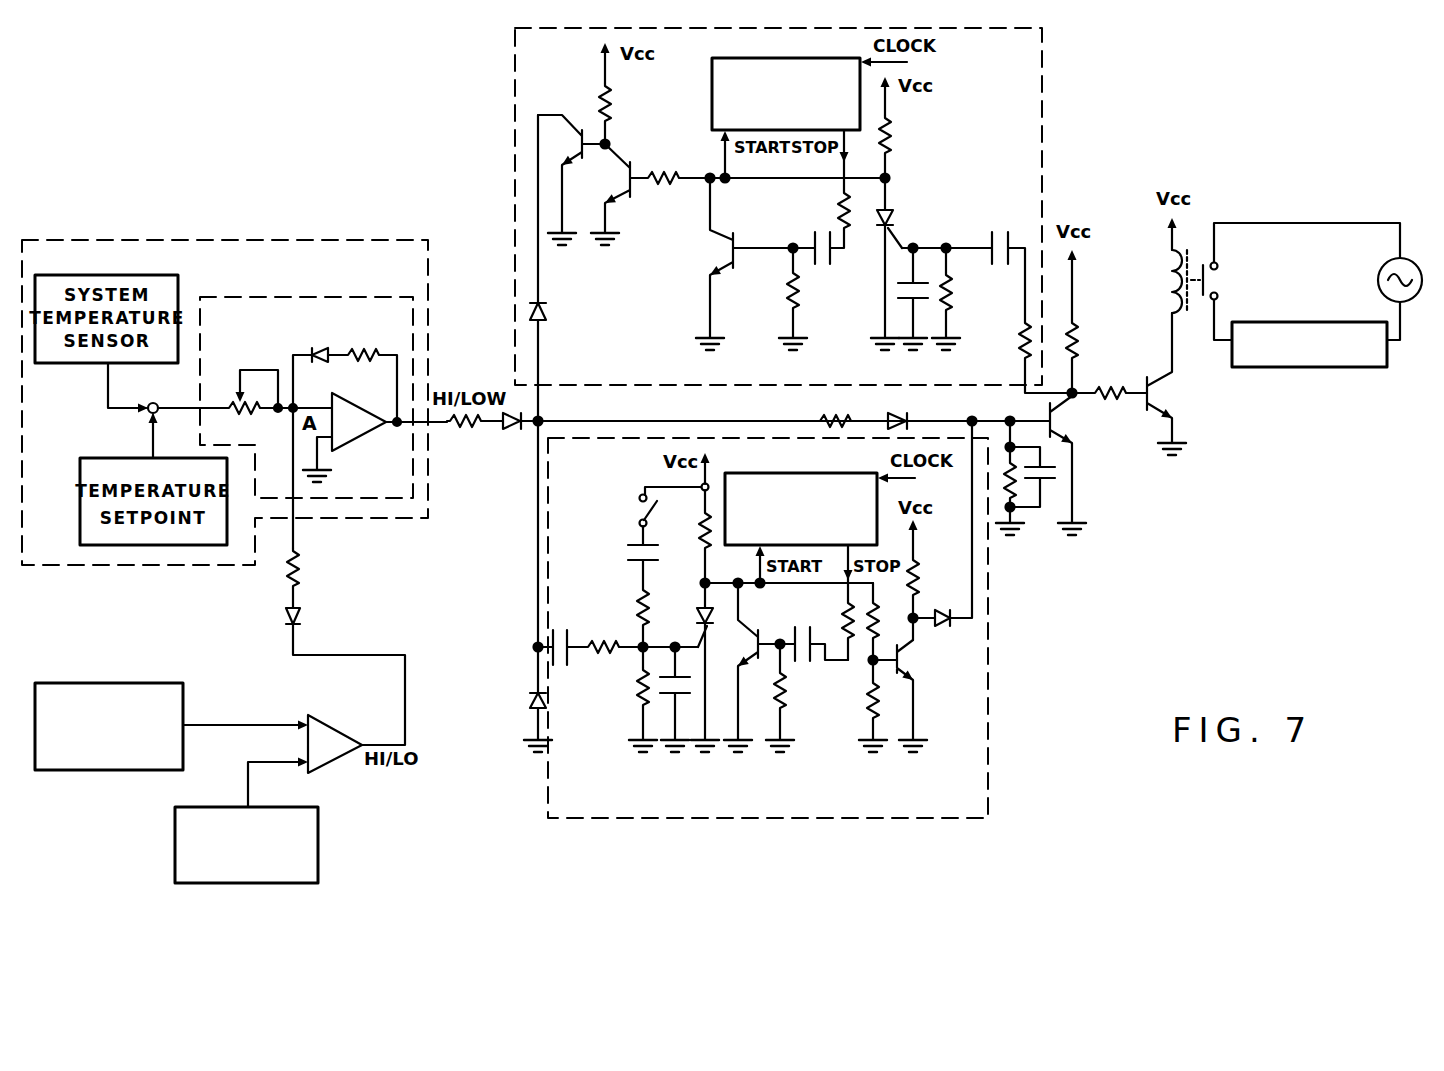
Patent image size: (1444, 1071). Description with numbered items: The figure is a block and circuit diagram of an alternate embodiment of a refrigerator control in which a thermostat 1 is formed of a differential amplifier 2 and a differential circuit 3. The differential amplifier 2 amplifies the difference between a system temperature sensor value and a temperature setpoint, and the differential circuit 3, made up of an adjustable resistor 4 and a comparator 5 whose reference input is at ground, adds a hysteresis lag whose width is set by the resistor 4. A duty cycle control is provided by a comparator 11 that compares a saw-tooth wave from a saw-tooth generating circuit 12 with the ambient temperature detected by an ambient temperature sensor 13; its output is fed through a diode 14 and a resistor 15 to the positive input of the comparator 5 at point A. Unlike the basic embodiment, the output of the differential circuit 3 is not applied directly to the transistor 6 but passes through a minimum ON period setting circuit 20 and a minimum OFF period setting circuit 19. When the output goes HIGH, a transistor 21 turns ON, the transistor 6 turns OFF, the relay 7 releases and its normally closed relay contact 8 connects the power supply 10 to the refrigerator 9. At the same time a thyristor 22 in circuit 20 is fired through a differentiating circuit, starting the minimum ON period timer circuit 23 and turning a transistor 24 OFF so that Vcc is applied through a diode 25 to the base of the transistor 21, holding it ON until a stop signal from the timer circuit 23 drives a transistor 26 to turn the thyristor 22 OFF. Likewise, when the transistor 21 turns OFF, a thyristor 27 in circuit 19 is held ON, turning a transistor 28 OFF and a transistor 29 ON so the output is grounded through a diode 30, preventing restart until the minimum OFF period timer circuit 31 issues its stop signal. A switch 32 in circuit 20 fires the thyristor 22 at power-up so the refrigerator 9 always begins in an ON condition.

The thermostat 1 is at (199, 240).
The differential amplifier 2 is at (147, 414).
The differential circuit 3 is at (246, 297).
The adjustable resistor 4 is at (248, 414).
The comparator 5 is at (358, 408).
The transistor 6 is at (1170, 394).
The relay 7 is at (1188, 314).
The relay contact 8 is at (1219, 285).
The refrigerator 9 is at (1350, 370).
The power supply 10 is at (1402, 302).
The comparator 11 is at (333, 762).
The saw-tooth generating circuit 12 is at (280, 883).
The ambient temperature sensor 13 is at (145, 683).
The diode 14 is at (304, 615).
The resistor 15 is at (302, 566).
The minimum OFF period setting circuit 19 is at (758, 28).
The minimum ON period setting circuit 20 is at (988, 725).
The transistor 21 is at (1071, 427).
The thyristor 22 is at (700, 618).
The minimum ON period timer circuit 23 is at (793, 473).
The transistor 24 is at (913, 668).
The diode 25 is at (952, 626).
The transistor 26 is at (748, 648).
The thyristor 27 is at (876, 224).
The transistor 28 is at (620, 198).
The transistor 29 is at (578, 116).
The diode 30 is at (548, 310).
The minimum OFF period timer circuit 31 is at (712, 100).
The switch 32 is at (638, 499).